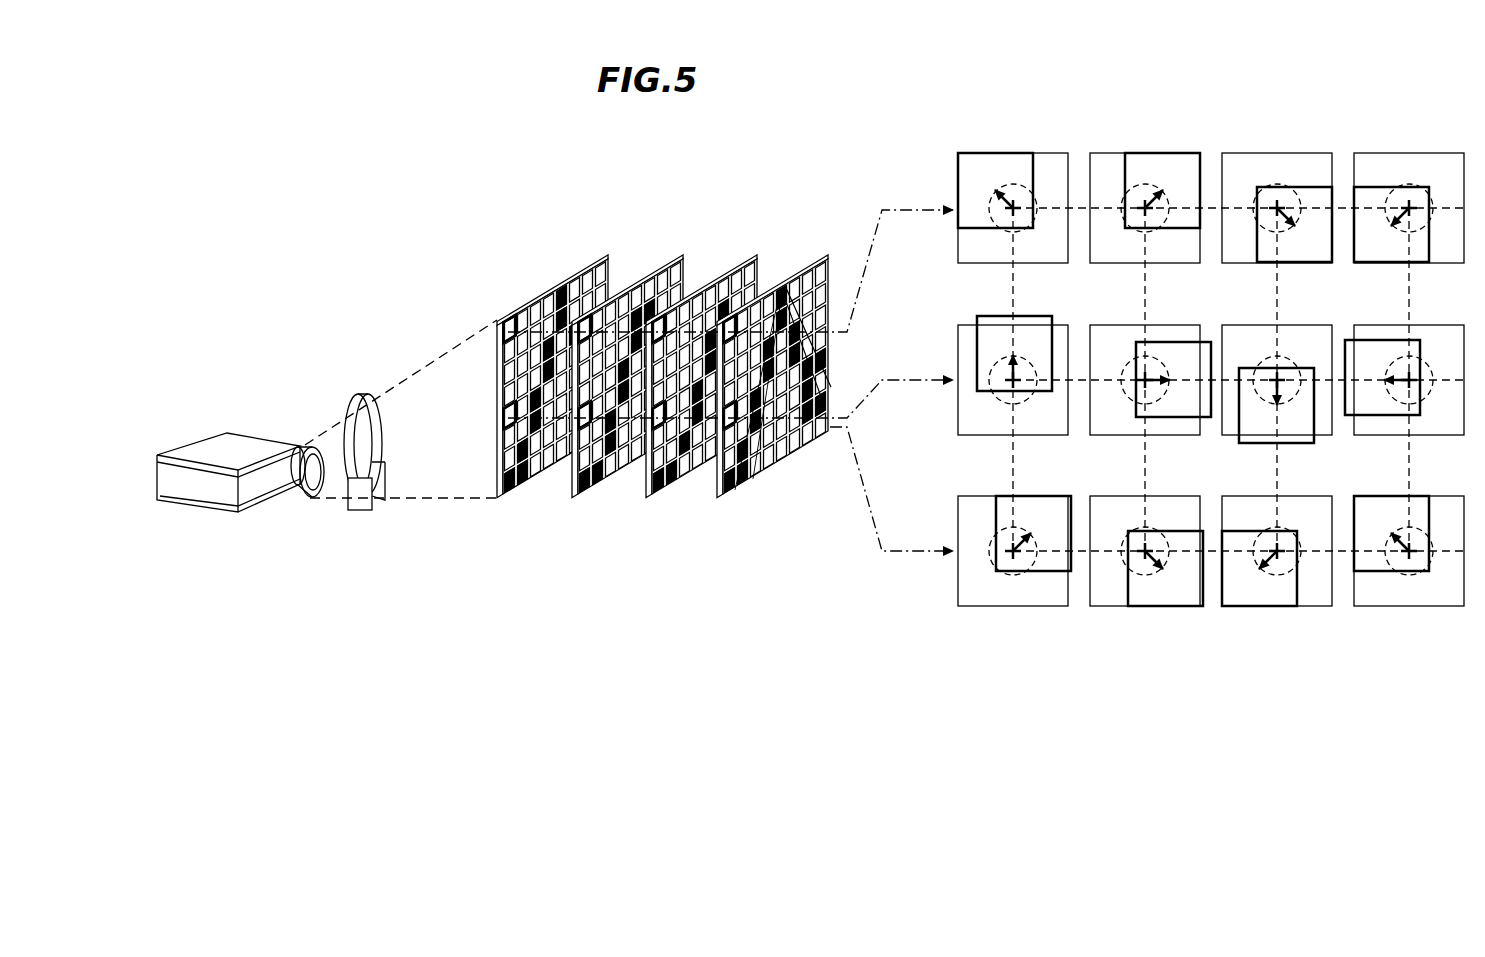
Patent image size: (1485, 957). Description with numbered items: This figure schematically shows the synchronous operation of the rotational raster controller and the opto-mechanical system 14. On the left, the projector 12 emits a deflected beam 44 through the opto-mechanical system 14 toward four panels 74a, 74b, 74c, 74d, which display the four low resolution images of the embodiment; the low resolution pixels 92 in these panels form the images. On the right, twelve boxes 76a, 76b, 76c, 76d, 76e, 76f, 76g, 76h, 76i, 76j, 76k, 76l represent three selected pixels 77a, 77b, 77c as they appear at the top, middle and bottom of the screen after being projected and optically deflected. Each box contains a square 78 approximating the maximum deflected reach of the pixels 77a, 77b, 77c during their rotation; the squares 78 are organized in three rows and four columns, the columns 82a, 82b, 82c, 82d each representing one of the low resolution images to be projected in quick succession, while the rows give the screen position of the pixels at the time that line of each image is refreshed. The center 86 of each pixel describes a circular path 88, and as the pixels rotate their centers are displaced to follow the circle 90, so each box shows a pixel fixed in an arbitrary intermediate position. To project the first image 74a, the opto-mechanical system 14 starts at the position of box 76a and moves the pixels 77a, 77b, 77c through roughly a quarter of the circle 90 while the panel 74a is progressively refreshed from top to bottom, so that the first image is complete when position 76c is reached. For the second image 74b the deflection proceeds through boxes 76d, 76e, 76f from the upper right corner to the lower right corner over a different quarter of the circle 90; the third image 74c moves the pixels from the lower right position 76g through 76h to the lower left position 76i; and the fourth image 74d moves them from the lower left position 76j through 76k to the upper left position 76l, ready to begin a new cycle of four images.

The projector 12 is at (204, 497).
The opto-mechanical system 14 is at (370, 497).
The deflected beam 44 is at (432, 368).
The first image panel 74a is at (538, 478).
The second image panel 74b is at (605, 480).
The third image panel 74c is at (678, 480).
The fourth image panel 74d is at (750, 478).
The pixel position box 76a is at (965, 178).
The pixel position box 76b is at (1025, 333).
The pixel position box 76c is at (1025, 505).
The pixel position box 76d is at (1168, 162).
The pixel position box 76e is at (1168, 355).
The pixel position box 76f is at (1180, 595).
The pixel position box 76g is at (1295, 262).
The pixel position box 76h is at (1295, 437).
The pixel position box 76i is at (1285, 595).
The pixel position box 76j is at (1418, 262).
The pixel position box 76k is at (1385, 410).
The pixel position box 76l is at (1375, 565).
The selected pixel 77a is at (883, 212).
The selected pixel 77b is at (883, 382).
The selected pixel 77c is at (883, 553).
The square 78 is at (976, 263).
The first column 82a is at (1037, 86).
The second column 82b is at (1155, 86).
The third column 82c is at (1280, 86).
The fourth column 82d is at (1400, 86).
The pixel center 86 is at (995, 188).
The circular path 88 is at (1013, 195).
The circle 90 is at (975, 228).
The low resolution pixels 92 is at (541, 313).